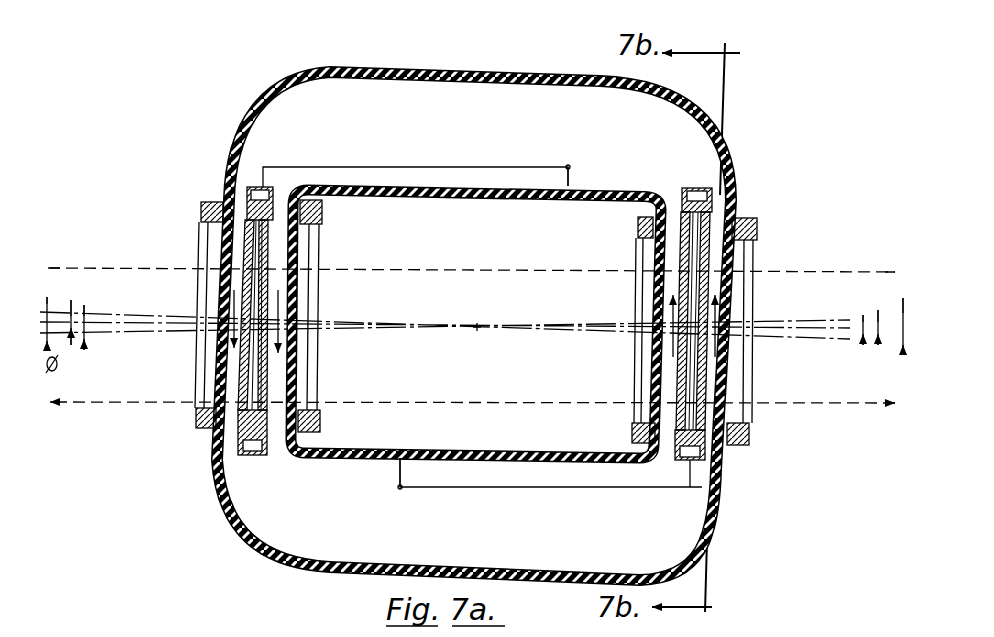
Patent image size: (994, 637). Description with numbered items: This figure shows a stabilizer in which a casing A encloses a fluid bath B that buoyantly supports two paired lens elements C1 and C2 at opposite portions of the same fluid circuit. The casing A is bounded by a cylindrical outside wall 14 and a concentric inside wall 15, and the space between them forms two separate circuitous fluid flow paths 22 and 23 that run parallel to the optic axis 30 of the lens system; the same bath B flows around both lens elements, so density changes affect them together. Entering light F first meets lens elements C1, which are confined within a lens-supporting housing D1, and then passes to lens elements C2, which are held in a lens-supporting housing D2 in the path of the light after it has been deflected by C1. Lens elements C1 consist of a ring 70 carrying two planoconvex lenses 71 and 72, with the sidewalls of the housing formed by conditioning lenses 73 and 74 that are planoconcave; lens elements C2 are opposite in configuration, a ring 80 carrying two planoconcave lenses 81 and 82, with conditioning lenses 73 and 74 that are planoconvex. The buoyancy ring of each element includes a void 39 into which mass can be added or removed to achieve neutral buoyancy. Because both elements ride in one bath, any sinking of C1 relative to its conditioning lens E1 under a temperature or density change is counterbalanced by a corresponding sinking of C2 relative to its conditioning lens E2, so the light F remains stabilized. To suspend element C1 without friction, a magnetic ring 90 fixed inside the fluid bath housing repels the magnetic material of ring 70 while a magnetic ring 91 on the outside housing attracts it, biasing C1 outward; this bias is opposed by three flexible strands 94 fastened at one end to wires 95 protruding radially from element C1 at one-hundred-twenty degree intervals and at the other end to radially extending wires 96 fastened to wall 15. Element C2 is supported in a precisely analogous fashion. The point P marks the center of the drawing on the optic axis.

The outside wall 14 is at (499, 72).
The inside wall 15 is at (495, 197).
The fluid flow path 22 is at (283, 458).
The fluid flow path 23 is at (241, 178).
The optic axis 30 is at (179, 338).
The void 39 is at (478, 427).
The ring 70 is at (206, 440).
The planoconvex lens 71 is at (214, 372).
The planoconvex lens 72 is at (311, 279).
The conditioning lens 73 is at (640, 354).
The conditioning lens 74 is at (306, 365).
The ring 80 is at (746, 221).
The planoconcave lens 81 is at (696, 391).
The planoconcave lens 82 is at (716, 388).
The magnetic ring 90 is at (322, 213).
The magnetic ring 91 is at (200, 214).
The flexible strand 94 is at (347, 168).
The wire 95 is at (688, 489).
The radially extending wire 96 is at (575, 152).
The casing A is at (282, 78).
The fluid bath B is at (449, 135).
The lens element C1 is at (267, 468).
The lens element C2 is at (697, 186).
The lens-supporting housing D1 is at (210, 191).
The lens-supporting housing D2 is at (667, 198).
The conditioning lens E1 is at (205, 245).
The conditioning lens E2 is at (646, 250).
The light F is at (269, 331).
The center point P is at (481, 324).